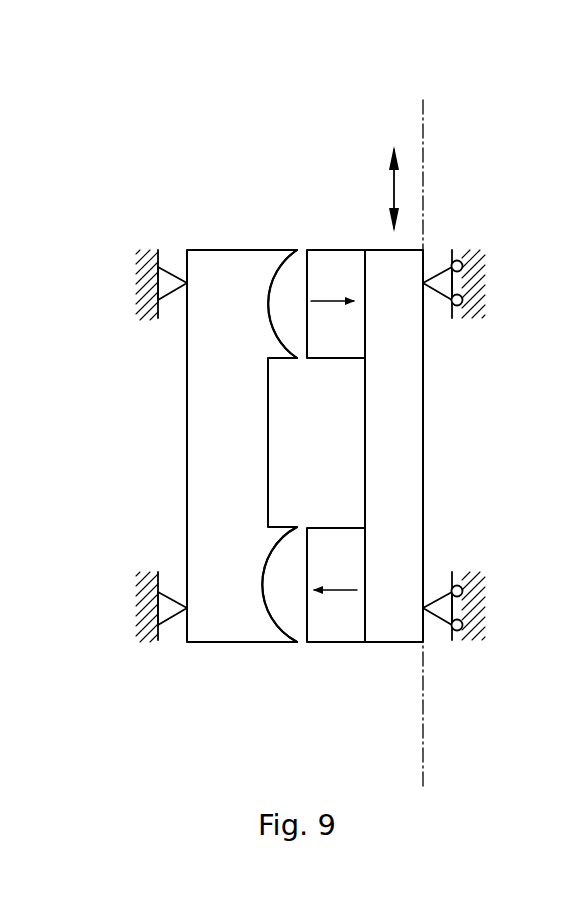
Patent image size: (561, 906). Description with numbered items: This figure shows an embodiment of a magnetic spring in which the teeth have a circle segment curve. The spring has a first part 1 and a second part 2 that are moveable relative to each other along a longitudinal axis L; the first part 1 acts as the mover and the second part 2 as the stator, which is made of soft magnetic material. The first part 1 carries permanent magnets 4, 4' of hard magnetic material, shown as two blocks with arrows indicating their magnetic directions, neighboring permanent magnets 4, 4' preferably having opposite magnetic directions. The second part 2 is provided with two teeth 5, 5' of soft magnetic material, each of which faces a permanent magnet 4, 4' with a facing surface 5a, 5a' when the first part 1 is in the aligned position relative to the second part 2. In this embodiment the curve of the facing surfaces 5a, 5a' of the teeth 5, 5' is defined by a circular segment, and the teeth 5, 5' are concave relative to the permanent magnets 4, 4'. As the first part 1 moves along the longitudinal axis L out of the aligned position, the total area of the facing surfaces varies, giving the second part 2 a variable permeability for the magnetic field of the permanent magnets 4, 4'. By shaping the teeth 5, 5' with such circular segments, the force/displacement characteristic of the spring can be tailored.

The first part 1 is at (378, 658).
The second part 2 is at (228, 658).
The permanent magnet 4 is at (336, 258).
The permanent magnet 4' is at (336, 634).
The tooth 5 is at (282, 258).
The tooth 5' is at (280, 549).
The facing surface 5a is at (186, 304).
The facing surface 5a' is at (186, 584).
The longitudinal axis L is at (423, 724).